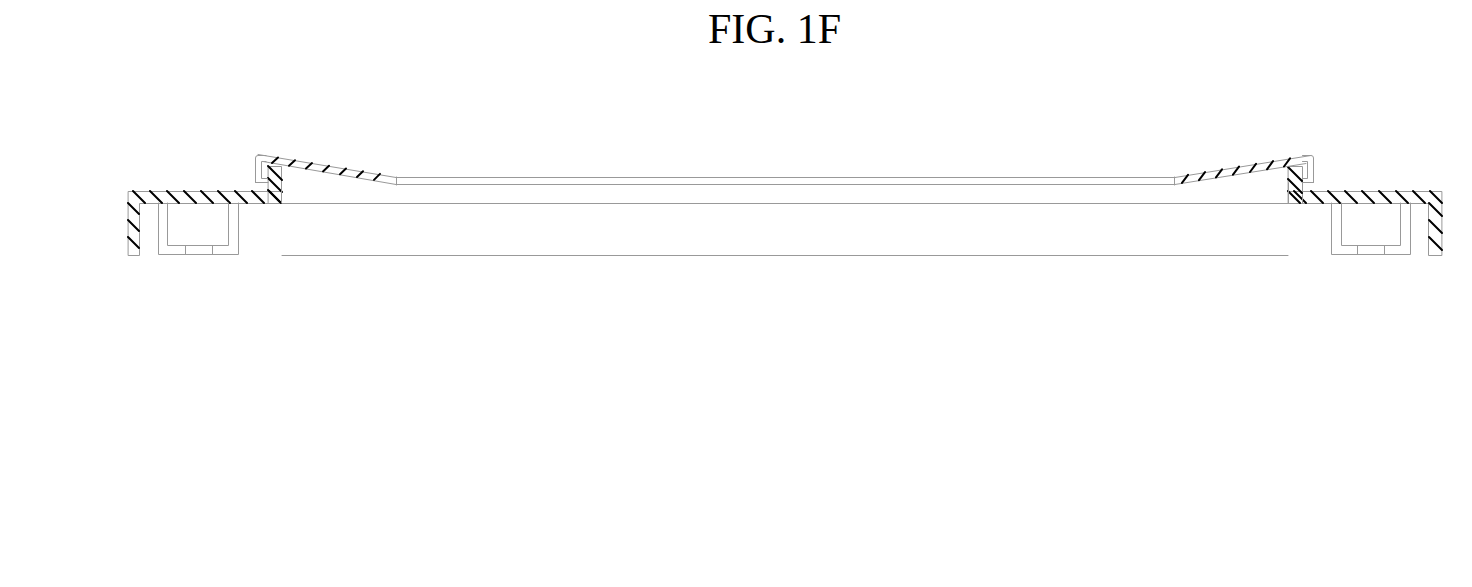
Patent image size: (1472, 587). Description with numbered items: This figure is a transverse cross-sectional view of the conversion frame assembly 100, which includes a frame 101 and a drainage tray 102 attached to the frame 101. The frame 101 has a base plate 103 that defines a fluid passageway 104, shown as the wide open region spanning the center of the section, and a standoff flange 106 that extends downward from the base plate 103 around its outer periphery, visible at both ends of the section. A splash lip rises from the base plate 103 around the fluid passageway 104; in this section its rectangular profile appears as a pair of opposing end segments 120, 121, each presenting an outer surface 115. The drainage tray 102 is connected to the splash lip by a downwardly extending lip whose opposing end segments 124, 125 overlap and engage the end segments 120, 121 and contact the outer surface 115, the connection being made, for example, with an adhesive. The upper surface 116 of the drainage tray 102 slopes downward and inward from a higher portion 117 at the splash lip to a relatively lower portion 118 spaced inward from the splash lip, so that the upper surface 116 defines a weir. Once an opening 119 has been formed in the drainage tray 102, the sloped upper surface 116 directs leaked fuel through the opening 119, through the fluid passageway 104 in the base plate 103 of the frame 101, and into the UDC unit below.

The conversion frame assembly 100 is at (217, 79).
The frame 101 is at (1418, 75).
The drainage tray 102 is at (373, 111).
The base plate 103 is at (186, 195).
The fluid passageway 104 is at (930, 190).
The standoff flange 106 is at (129, 237).
The outer surface of the splash lip 115 is at (254, 178).
The upper surface of the drainage tray 116 is at (355, 166).
The higher portion 117 is at (282, 163).
The lower portion 118 is at (397, 179).
The opening 119 is at (757, 178).
The end segment of the splash lip 120 is at (1288, 183).
The end segment of the splash lip 121 is at (282, 183).
The end segment of the downwardly extending lip 124 is at (1307, 181).
The end segment of the downwardly extending lip 125 is at (256, 168).